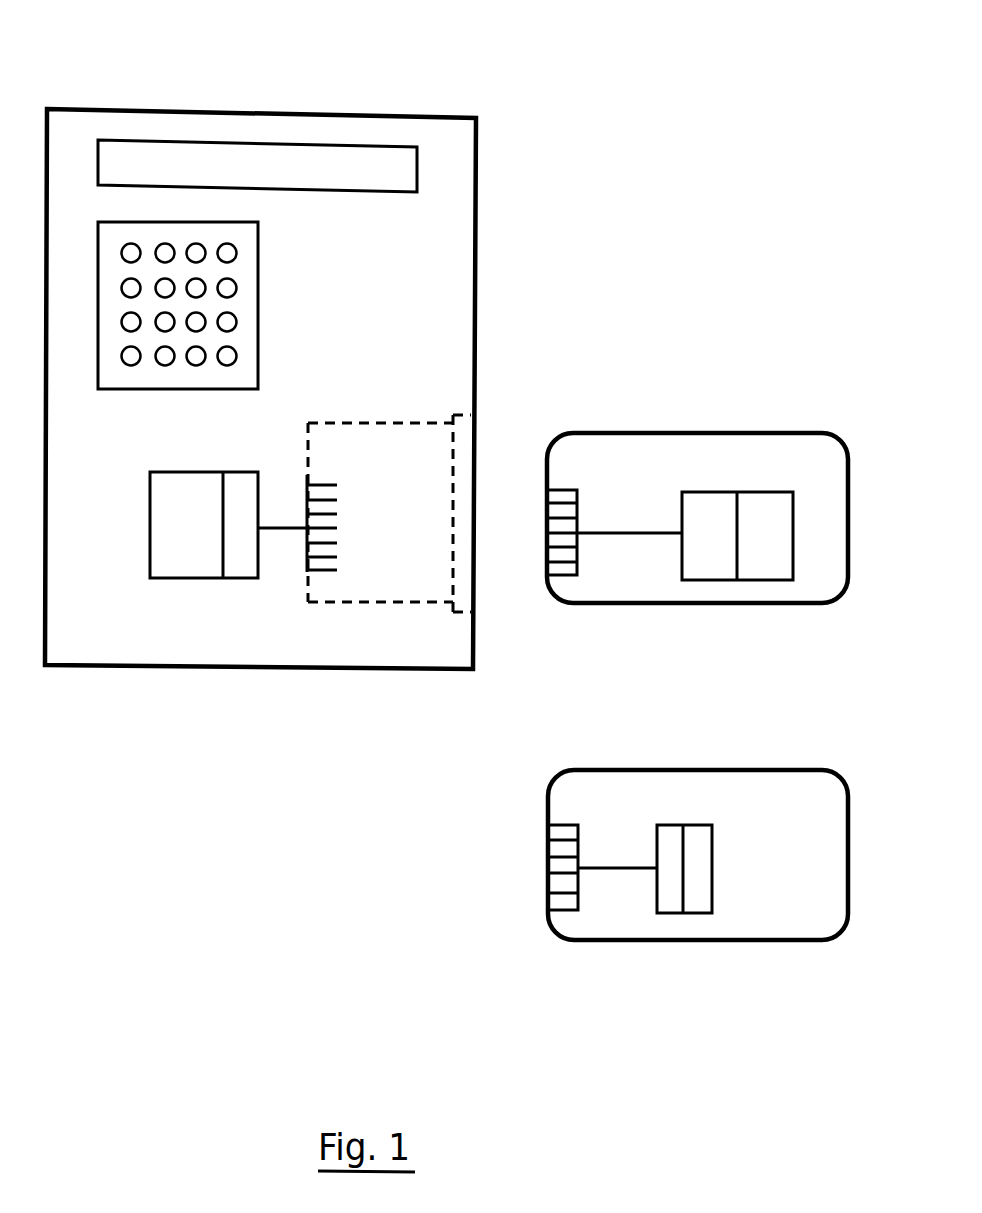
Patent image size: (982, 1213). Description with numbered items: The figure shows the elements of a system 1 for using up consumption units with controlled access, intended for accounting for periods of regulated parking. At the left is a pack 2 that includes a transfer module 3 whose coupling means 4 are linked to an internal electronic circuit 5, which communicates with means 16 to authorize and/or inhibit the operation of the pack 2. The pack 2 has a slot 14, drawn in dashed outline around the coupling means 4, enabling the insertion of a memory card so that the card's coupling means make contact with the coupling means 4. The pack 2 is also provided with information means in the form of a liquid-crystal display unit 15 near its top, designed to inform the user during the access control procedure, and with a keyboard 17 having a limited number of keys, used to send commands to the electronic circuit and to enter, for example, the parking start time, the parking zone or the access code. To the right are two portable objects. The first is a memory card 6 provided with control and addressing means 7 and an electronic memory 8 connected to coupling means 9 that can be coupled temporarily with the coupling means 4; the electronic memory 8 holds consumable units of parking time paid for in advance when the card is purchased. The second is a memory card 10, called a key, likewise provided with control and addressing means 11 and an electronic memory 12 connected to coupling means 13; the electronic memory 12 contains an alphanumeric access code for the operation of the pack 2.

The system 1 is at (613, 138).
The pack 2 is at (203, 110).
The transfer module 3 is at (274, 472).
The coupling means 4 is at (302, 553).
The internal electronic circuit 5 is at (183, 543).
The memory card 6 is at (661, 425).
The control and addressing means 7 is at (707, 557).
The electronic memory 8 is at (748, 520).
The coupling means 9 is at (573, 575).
The memory card 10 is at (797, 941).
The control and addressing means 11 is at (667, 902).
The electronic memory 12 is at (697, 897).
The coupling means 13 is at (558, 913).
The slot 14 is at (476, 427).
The liquid-crystal display unit 15 is at (335, 158).
The means to authorize and/or inhibit operation 16 is at (243, 568).
The keyboard 17 is at (143, 390).